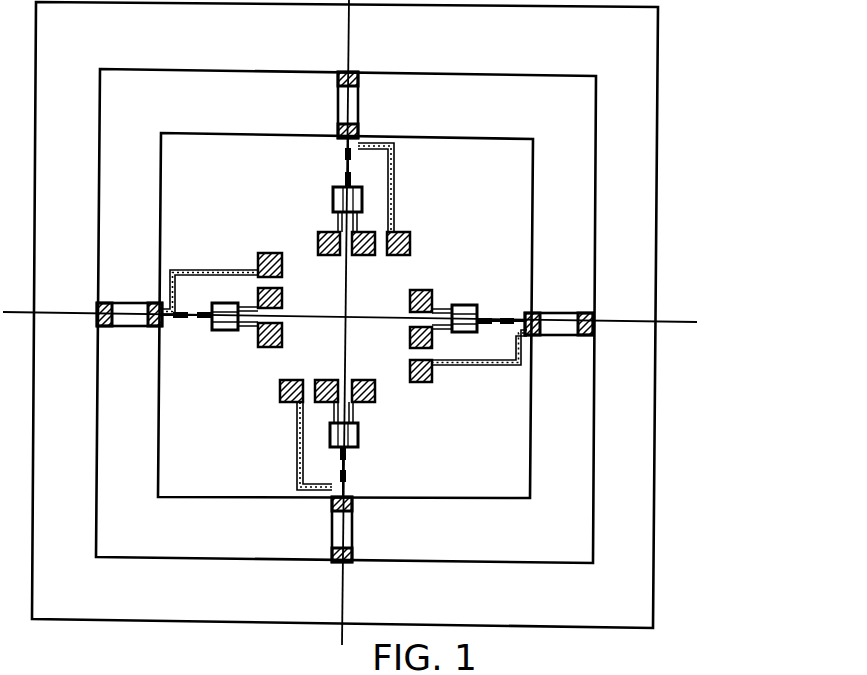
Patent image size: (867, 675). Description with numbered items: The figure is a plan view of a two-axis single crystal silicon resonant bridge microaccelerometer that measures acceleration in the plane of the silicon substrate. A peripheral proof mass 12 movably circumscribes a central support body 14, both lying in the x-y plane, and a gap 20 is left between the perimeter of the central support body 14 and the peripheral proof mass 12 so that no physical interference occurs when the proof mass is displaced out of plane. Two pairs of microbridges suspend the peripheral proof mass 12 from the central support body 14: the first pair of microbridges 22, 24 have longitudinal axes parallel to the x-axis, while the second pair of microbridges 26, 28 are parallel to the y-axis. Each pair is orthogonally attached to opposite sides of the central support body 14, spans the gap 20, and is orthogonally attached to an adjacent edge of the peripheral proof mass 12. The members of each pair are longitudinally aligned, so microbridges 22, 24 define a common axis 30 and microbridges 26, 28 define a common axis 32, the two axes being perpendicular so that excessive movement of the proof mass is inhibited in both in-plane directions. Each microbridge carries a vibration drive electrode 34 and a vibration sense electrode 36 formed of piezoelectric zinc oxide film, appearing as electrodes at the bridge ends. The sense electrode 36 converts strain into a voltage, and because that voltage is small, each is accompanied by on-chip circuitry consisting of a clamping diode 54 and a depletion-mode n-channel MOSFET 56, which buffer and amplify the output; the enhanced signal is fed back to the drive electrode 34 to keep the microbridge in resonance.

The peripheral proof mass 12 is at (621, 241).
The central support body 14 is at (465, 153).
The gap 20 is at (480, 97).
The microbridge 22 is at (130, 322).
The microbridge 24 is at (558, 335).
The microbridge 26 is at (358, 100).
The microbridge 28 is at (332, 532).
The common axis 30 is at (372, 317).
The common axis 32 is at (345, 300).
The drive electrode 34 is at (338, 78).
The sense electrode 36 is at (355, 132).
The clamping diode 54 is at (329, 166).
The depletion-mode n-channel MOSFET 56 is at (377, 199).